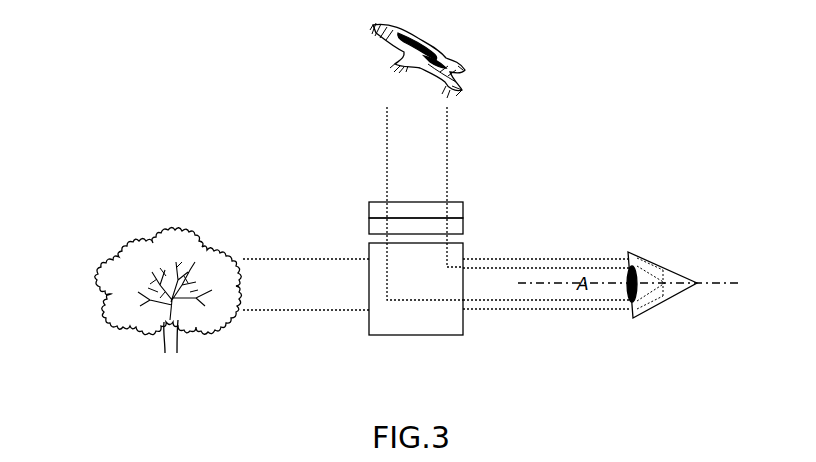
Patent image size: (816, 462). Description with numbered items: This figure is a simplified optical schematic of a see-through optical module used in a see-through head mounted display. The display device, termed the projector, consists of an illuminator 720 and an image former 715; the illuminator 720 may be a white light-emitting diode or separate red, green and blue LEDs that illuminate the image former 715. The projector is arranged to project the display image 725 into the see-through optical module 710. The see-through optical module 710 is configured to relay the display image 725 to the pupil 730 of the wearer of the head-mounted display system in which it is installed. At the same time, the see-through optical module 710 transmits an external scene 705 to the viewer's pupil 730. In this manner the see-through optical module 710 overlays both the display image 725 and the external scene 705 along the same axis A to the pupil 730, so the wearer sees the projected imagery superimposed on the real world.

The scene 705 is at (88, 276).
The see-through optical module 710 is at (416, 336).
The image former 715 is at (368, 226).
The illuminator 720 is at (369, 211).
The display image 725 is at (478, 64).
The pupil 730 is at (619, 289).